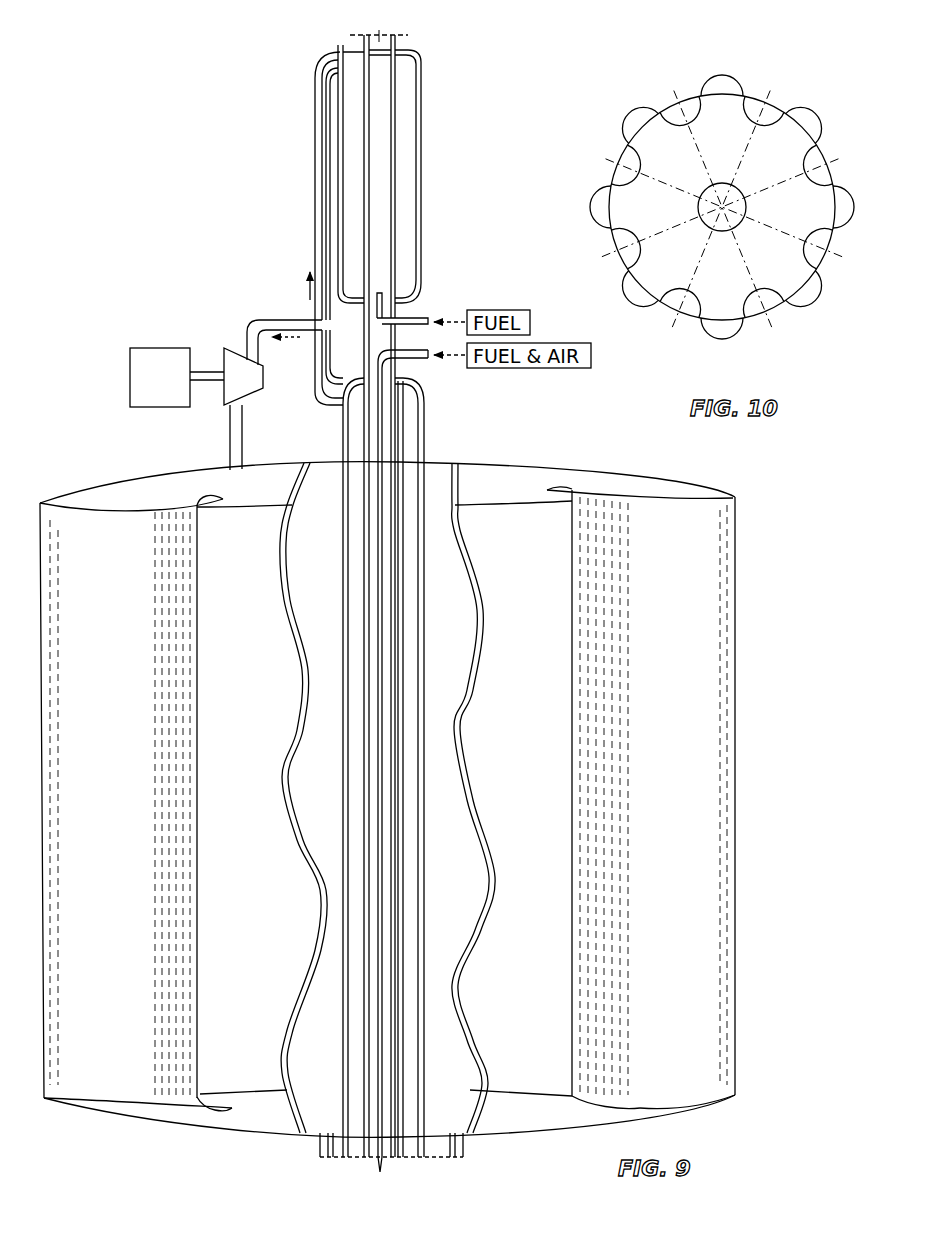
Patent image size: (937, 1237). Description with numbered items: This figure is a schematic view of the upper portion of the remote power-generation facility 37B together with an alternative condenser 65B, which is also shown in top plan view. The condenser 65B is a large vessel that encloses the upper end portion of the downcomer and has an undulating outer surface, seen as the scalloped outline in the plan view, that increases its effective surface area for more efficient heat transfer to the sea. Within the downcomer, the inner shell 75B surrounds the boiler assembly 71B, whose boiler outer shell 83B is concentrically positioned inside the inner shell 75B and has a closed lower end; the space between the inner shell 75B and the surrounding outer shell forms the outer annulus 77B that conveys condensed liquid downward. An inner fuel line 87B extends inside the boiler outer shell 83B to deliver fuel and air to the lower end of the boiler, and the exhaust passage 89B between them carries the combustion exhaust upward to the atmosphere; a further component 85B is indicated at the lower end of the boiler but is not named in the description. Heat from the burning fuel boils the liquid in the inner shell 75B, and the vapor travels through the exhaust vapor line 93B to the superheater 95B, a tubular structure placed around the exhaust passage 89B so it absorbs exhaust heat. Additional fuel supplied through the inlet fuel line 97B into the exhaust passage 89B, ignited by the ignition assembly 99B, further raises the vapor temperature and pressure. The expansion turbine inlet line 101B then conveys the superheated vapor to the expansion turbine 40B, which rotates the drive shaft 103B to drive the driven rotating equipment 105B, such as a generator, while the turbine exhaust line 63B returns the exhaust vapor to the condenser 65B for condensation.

In FIG. 9, the remote power-generation facility 37B is at (131, 131).
In FIG. 9, the exhaust vapor line 93B is at (315, 150).
In FIG. 9, the superheater 95B is at (418, 127).
In FIG. 9, the expansion turbine inlet line 101B is at (297, 321).
In FIG. 9, the ignition assembly 99B is at (378, 292).
In FIG. 9, the inlet fuel line 97B is at (417, 314).
In FIG. 9, the driven rotating equipment 105B is at (150, 348).
In FIG. 9, the drive shaft 103B is at (210, 371).
In FIG. 9, the expansion turbine 40B is at (240, 347).
In FIG. 9, the turbine exhaust line 63B is at (243, 453).
In FIG. 9, the condenser 65B is at (118, 477).
In FIG. 10, the condenser 65B is at (720, 75).
In FIG. 9, the boiler assembly 71B is at (424, 403).
In FIG. 9, the inner shell 75B is at (427, 735).
In FIG. 9, the inner fuel line 87B is at (393, 908).
In FIG. 9, the boiler outer shell 83B is at (430, 1050).
In FIG. 9, the exhaust passage 89B is at (370, 1146).
In FIG. 9, the fuel and air nozzle 85B is at (414, 1146).
In FIG. 9, the outer annulus 77B is at (443, 1146).